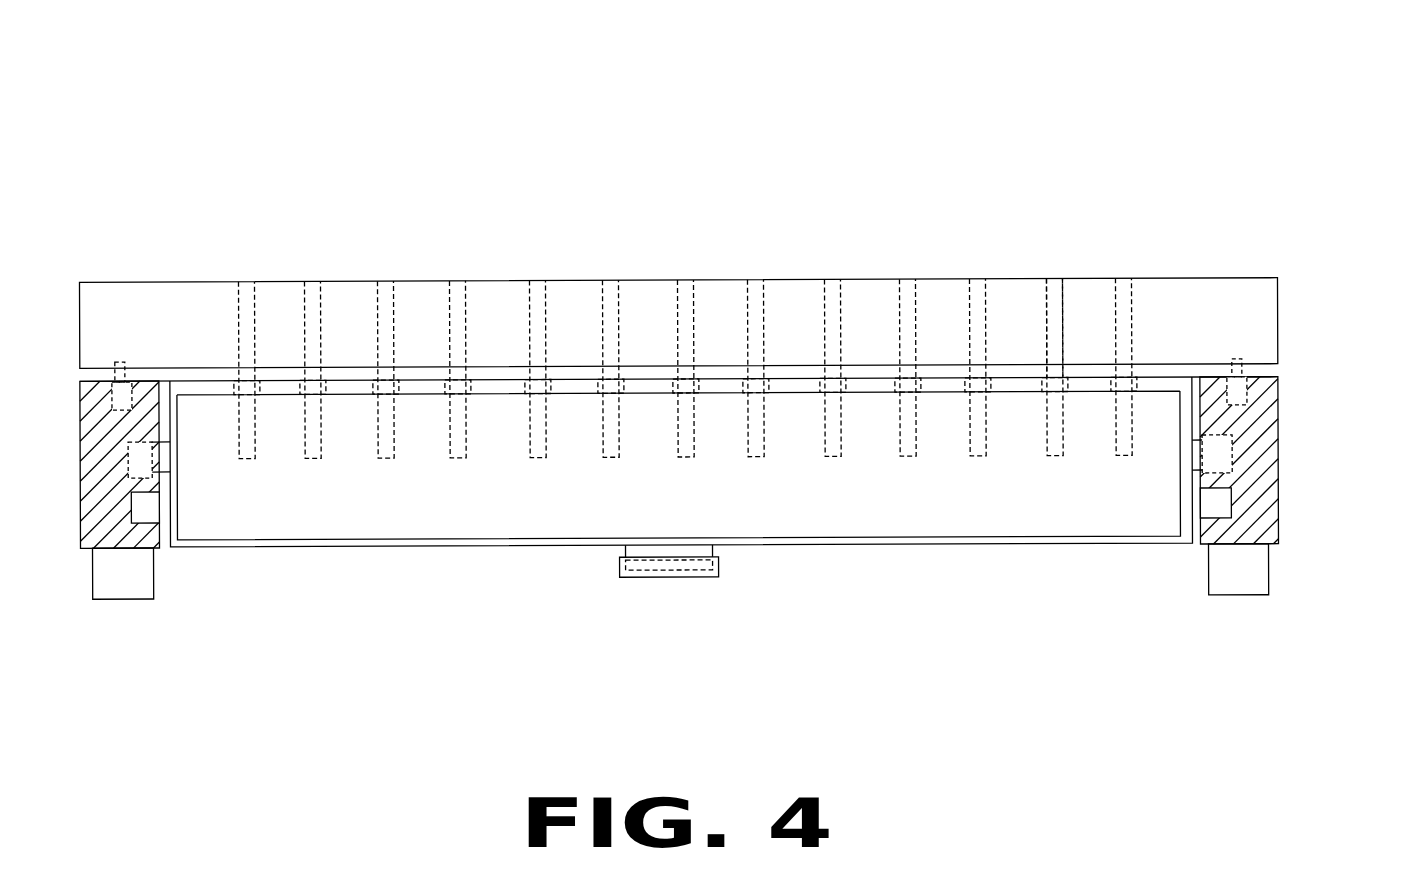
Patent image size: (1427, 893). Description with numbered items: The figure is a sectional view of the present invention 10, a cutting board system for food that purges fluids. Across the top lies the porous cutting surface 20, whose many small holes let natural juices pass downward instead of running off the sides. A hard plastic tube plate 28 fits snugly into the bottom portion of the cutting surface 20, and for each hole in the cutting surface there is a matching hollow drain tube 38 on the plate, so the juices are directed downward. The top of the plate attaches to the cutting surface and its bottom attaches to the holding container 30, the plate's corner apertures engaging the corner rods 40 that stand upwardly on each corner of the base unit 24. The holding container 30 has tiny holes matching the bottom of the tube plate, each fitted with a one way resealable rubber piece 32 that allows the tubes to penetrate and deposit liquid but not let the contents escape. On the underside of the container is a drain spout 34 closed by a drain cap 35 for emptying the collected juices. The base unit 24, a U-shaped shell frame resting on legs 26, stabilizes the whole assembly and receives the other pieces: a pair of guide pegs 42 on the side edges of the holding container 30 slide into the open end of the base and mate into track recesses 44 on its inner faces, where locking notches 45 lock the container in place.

The present invention 10 is at (642, 208).
The porous cutting surface 20 is at (938, 279).
The base unit 24 is at (82, 548).
The legs 26 is at (141, 598).
The tube plate 28 is at (1270, 366).
The holding container 30 is at (972, 545).
The one way resealable rubber piece 32 is at (247, 383).
The drain spout 34 is at (712, 549).
The drain cap 35 is at (646, 571).
The hollow drain tube 38 is at (1062, 298).
The corner rods 40 is at (1250, 380).
The guide pegs 42 is at (1233, 442).
The track recesses 44 is at (1232, 493).
The locking notches 45 is at (1236, 463).